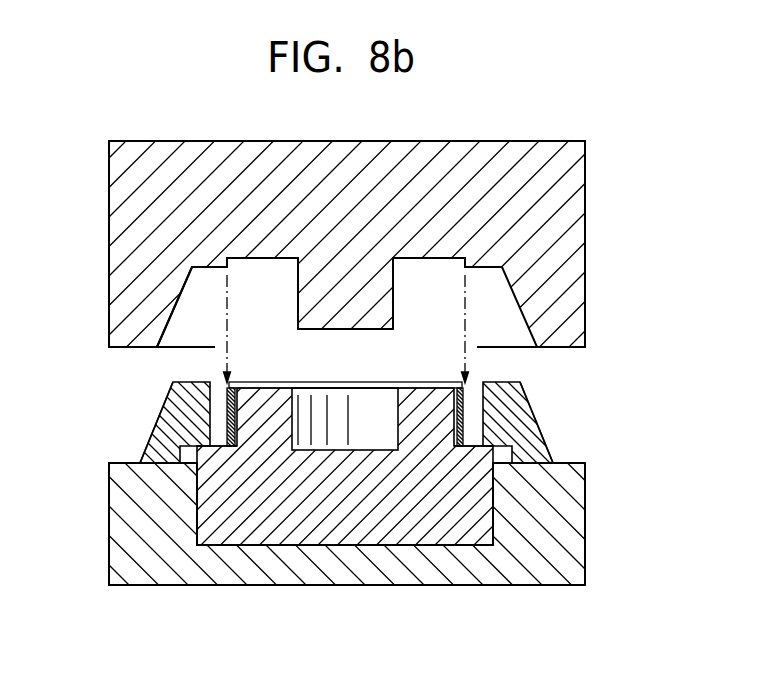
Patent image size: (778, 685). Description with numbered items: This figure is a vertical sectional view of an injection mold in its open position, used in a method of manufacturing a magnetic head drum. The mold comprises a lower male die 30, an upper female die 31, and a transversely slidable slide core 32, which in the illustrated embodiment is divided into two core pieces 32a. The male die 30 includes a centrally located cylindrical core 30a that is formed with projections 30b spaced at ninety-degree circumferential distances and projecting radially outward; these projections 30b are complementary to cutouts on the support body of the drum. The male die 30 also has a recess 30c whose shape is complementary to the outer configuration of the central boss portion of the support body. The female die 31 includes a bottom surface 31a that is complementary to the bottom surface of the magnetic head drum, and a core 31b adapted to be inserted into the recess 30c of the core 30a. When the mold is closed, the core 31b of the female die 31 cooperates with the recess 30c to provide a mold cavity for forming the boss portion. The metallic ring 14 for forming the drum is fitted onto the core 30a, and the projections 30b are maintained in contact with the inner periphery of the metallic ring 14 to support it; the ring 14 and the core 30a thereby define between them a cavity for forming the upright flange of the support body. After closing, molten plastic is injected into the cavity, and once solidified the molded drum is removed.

The metallic ring 14 is at (228, 432).
The lower male die 30 is at (442, 525).
The cylindrical core 30a is at (430, 415).
The projections 30b is at (456, 444).
The recess 30c is at (397, 418).
The upper female die 31 is at (543, 157).
The bottom surface 31a is at (258, 262).
The core 31b is at (352, 317).
The slide core 32 is at (160, 391).
The core pieces 32a is at (170, 438).